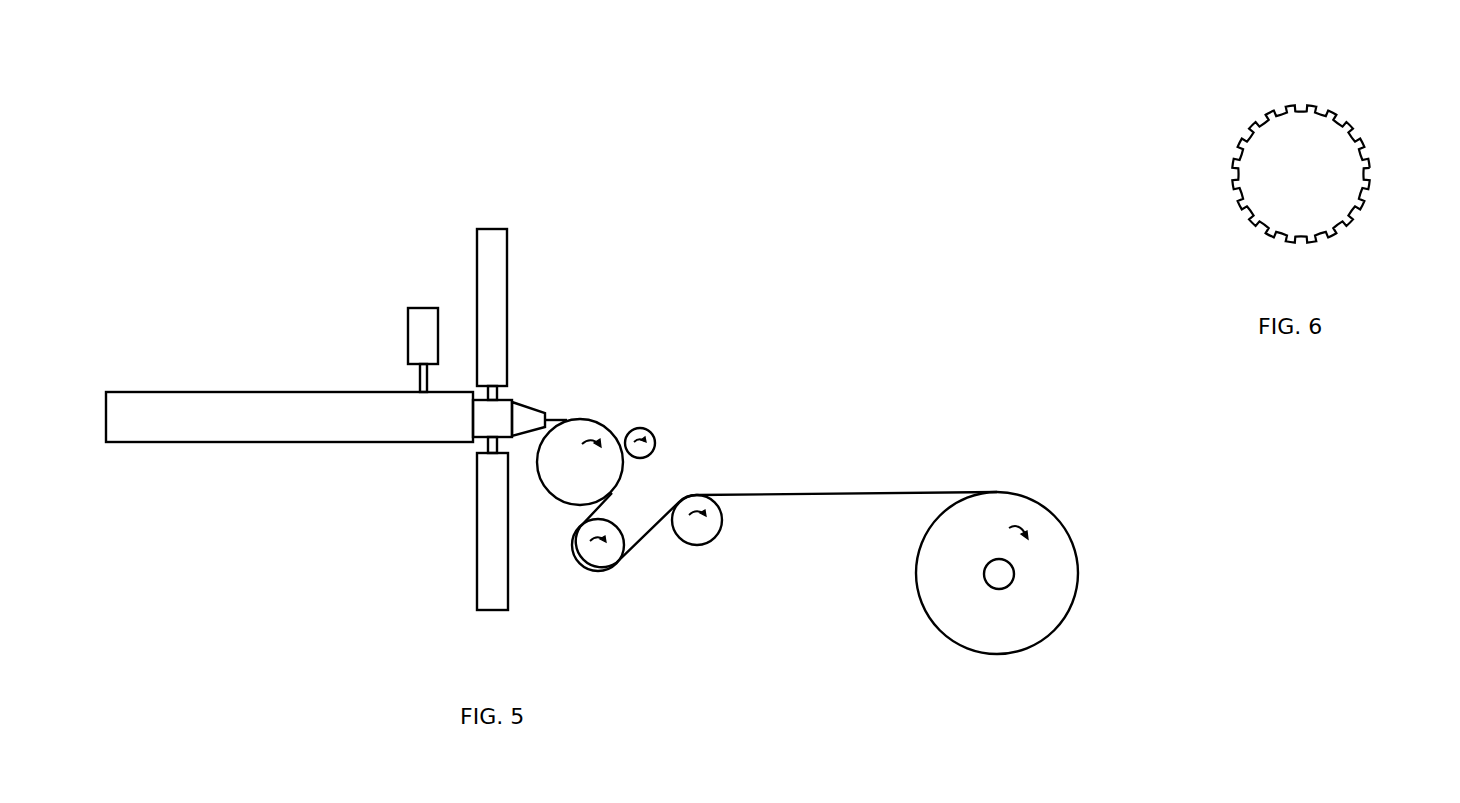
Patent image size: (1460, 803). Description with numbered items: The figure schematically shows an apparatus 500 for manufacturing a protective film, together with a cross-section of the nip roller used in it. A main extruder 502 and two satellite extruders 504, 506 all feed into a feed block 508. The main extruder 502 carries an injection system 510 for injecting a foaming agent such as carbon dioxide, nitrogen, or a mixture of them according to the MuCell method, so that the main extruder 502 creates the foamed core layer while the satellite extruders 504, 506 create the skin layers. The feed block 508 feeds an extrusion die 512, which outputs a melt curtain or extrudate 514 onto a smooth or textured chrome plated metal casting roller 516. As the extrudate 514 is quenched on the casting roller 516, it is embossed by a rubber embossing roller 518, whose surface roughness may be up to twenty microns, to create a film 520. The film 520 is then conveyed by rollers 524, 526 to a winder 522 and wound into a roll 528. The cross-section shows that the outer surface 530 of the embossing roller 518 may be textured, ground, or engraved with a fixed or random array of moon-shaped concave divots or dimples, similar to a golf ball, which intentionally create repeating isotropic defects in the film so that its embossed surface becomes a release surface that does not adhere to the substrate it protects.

In FIG. 5, the apparatus 500 is at (163, 242).
In FIG. 5, the main extruder 502 is at (190, 392).
In FIG. 5, the satellite extruder 504 is at (508, 266).
In FIG. 5, the satellite extruder 506 is at (477, 583).
In FIG. 5, the feed block 508 is at (484, 445).
In FIG. 5, the injection system 510 is at (408, 340).
In FIG. 5, the extrusion die 512 is at (520, 404).
In FIG. 5, the extrudate 514 is at (562, 420).
In FIG. 5, the casting roller 516 is at (572, 485).
In FIG. 5, the embossing roller 518 is at (655, 436).
In FIG. 6, the embossing roller 518 is at (1301, 144).
In FIG. 5, the film 520 is at (611, 510).
In FIG. 5, the winder 522 is at (997, 580).
In FIG. 5, the roller 524 is at (590, 560).
In FIG. 5, the roller 526 is at (697, 542).
In FIG. 5, the roll 528 is at (1073, 540).
In FIG. 6, the outer surface 530 is at (1343, 125).